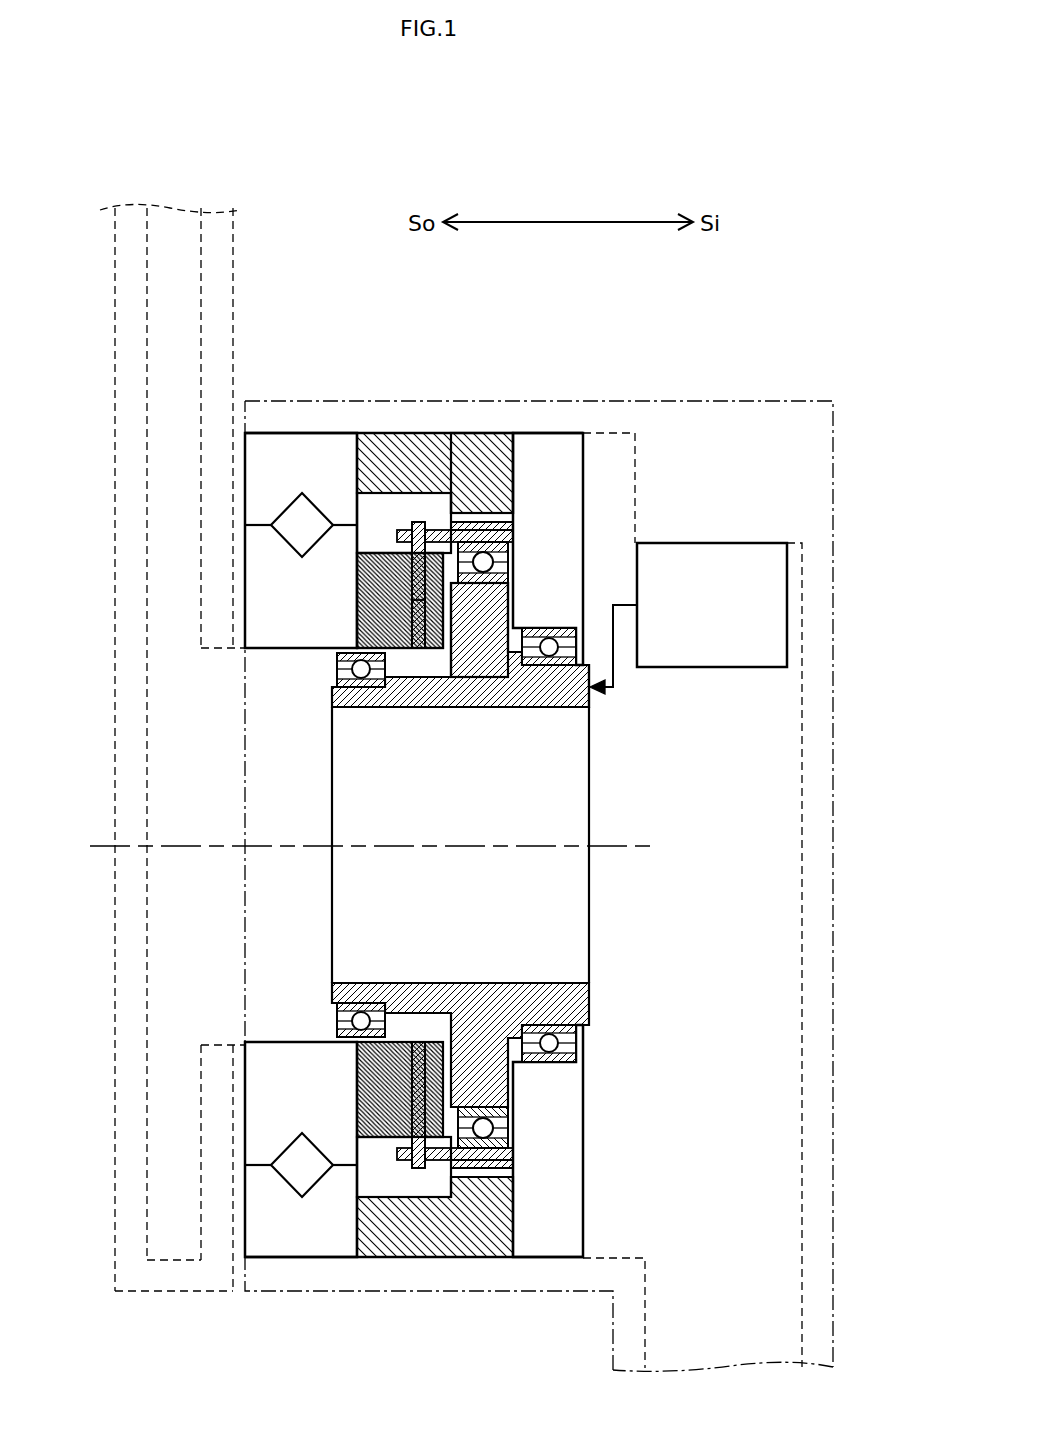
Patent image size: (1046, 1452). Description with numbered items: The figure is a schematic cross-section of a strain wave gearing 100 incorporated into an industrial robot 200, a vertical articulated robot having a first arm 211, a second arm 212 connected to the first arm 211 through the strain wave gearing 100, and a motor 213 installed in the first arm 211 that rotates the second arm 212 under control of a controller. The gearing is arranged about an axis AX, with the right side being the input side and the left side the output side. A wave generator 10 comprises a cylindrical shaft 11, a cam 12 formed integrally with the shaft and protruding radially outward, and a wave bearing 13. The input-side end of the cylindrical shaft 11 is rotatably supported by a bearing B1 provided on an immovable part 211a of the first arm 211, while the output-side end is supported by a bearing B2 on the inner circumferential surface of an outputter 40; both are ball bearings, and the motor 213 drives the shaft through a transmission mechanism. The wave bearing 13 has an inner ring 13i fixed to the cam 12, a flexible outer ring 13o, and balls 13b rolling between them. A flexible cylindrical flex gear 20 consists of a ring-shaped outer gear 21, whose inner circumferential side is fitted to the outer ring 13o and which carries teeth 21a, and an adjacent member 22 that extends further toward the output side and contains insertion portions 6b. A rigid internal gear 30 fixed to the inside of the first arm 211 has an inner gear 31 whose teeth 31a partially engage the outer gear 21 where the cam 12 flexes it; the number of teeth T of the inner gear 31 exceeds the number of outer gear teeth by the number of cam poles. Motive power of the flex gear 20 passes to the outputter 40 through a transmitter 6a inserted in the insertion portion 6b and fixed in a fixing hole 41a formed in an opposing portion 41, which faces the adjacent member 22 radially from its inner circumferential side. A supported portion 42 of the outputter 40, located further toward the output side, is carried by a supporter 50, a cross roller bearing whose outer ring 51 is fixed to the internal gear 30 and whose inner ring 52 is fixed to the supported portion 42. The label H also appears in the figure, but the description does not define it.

The strain wave gearing 100 is at (680, 1042).
The wave generator 10 is at (590, 992).
The cylindrical shaft 11 is at (490, 663).
The cam 12 is at (470, 640).
The wave bearing 13 is at (513, 562).
The inner ring 13i is at (508, 1115).
The balls 13b is at (492, 1128).
The outer ring 13o is at (513, 1147).
The flex gear 20 is at (520, 1155).
The outer gear 21 is at (515, 533).
The teeth 21a is at (515, 518).
The adjacent member 22 is at (445, 537).
The internal gear 30 is at (520, 1200).
The inner gear 31 is at (482, 513).
The teeth 31a is at (493, 450).
The outputter 40 is at (355, 593).
The opposing portion 41 is at (443, 640).
The fixing hole 41a is at (418, 640).
The supported portion 42 is at (357, 615).
The supporter 50 is at (243, 538).
The outer ring 51 is at (275, 482).
The inner ring 52 is at (273, 563).
The transmitter 6a is at (418, 522).
The insertion portion 6b is at (400, 515).
The industrial robot 200 is at (810, 325).
The first arm 211 is at (772, 400).
The immovable part 211a is at (583, 500).
The second arm 212 is at (115, 350).
The motor 213 is at (690, 668).
The bearing B1 is at (555, 630).
The bearing B2 is at (357, 667).
The hole H is at (420, 1168).
The number of teeth T is at (418, 1150).
The axis AX is at (351, 847).